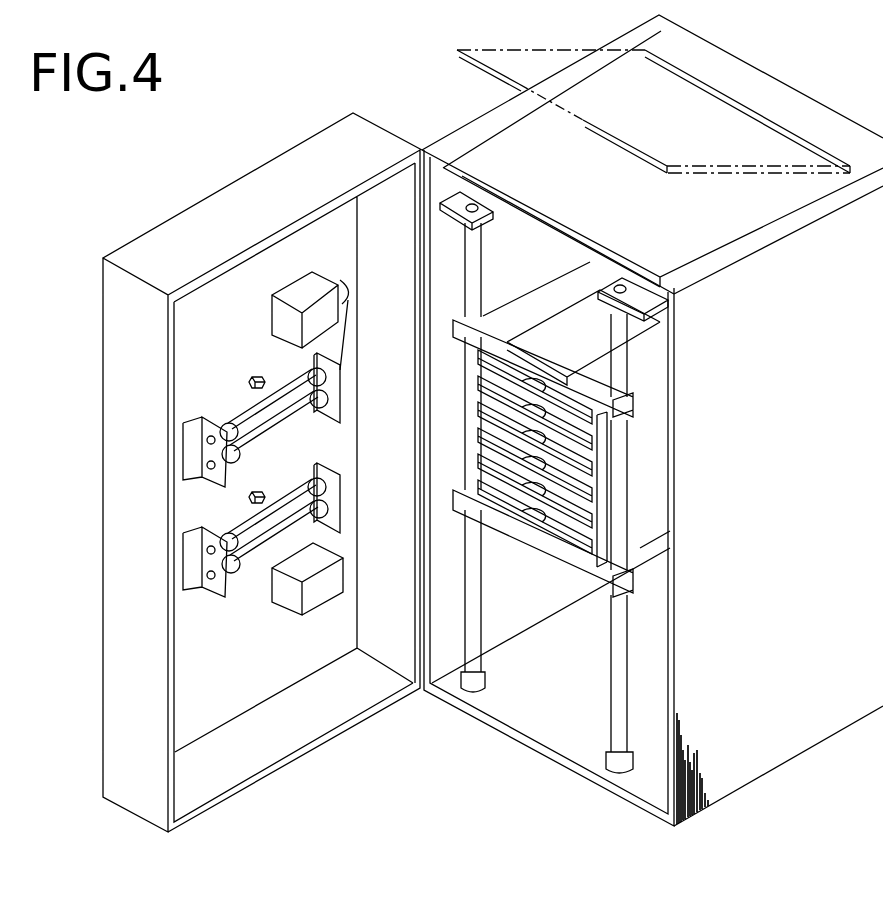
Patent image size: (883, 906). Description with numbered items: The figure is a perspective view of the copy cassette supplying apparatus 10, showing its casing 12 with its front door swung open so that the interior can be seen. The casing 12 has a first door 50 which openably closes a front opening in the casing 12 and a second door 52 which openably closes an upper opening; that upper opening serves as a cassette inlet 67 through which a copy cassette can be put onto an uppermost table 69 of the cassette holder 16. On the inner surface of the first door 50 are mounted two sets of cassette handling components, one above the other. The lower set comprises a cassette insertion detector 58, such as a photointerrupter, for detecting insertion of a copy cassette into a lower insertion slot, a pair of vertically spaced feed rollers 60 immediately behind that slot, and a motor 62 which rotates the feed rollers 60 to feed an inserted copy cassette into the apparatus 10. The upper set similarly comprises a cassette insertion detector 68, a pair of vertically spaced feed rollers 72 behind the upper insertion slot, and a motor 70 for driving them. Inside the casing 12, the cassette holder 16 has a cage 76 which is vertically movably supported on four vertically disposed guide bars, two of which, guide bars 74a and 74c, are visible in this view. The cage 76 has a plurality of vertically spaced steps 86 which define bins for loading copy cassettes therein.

The copy cassette supplying apparatus 10 is at (318, 95).
The casing 12 is at (815, 713).
The cassette holder 16 is at (648, 470).
The first door 50 is at (123, 306).
The second door 52 is at (727, 116).
The cassette insertion detector 58 is at (260, 492).
The feed rollers 60 is at (243, 560).
The motor 62 is at (311, 598).
The cassette inlet 67 is at (813, 262).
The cassette insertion detector 68 is at (255, 378).
The uppermost table 69 is at (590, 332).
The motor 70 is at (305, 292).
The feed rollers 72 is at (245, 417).
The guide bar 74a is at (476, 618).
The guide bar 74c is at (618, 632).
The cage 76 is at (656, 524).
The steps 86 is at (495, 448).